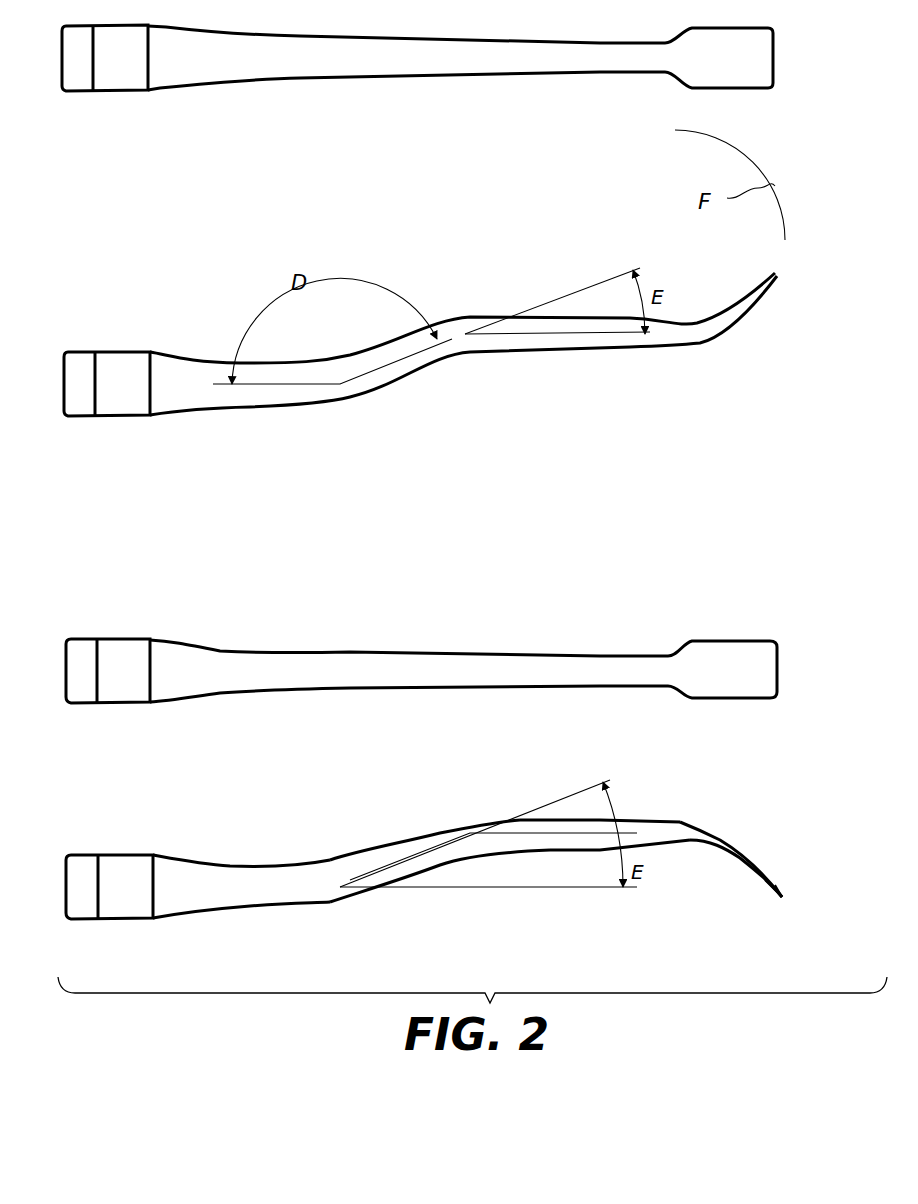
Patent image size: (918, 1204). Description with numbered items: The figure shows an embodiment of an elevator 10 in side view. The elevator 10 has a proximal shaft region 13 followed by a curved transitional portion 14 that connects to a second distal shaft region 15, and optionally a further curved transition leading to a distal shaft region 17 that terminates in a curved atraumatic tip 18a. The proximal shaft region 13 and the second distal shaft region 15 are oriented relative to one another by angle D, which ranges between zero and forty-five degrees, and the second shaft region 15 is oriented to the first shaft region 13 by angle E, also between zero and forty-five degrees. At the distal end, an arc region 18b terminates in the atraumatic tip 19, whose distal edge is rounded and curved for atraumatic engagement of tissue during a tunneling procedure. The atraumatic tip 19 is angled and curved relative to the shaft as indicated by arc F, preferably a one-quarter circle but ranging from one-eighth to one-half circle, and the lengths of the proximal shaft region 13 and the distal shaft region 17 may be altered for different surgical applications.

The elevator 10 is at (823, 920).
The proximal shaft region 13 is at (208, 897).
The curved transitional portion 14 is at (350, 897).
The second distal shaft region 15 is at (428, 832).
The distal shaft region 17 is at (622, 815).
The curved atraumatic tip 18a is at (753, 853).
The arc region 18b is at (730, 857).
The atraumatic tip 19 is at (781, 903).